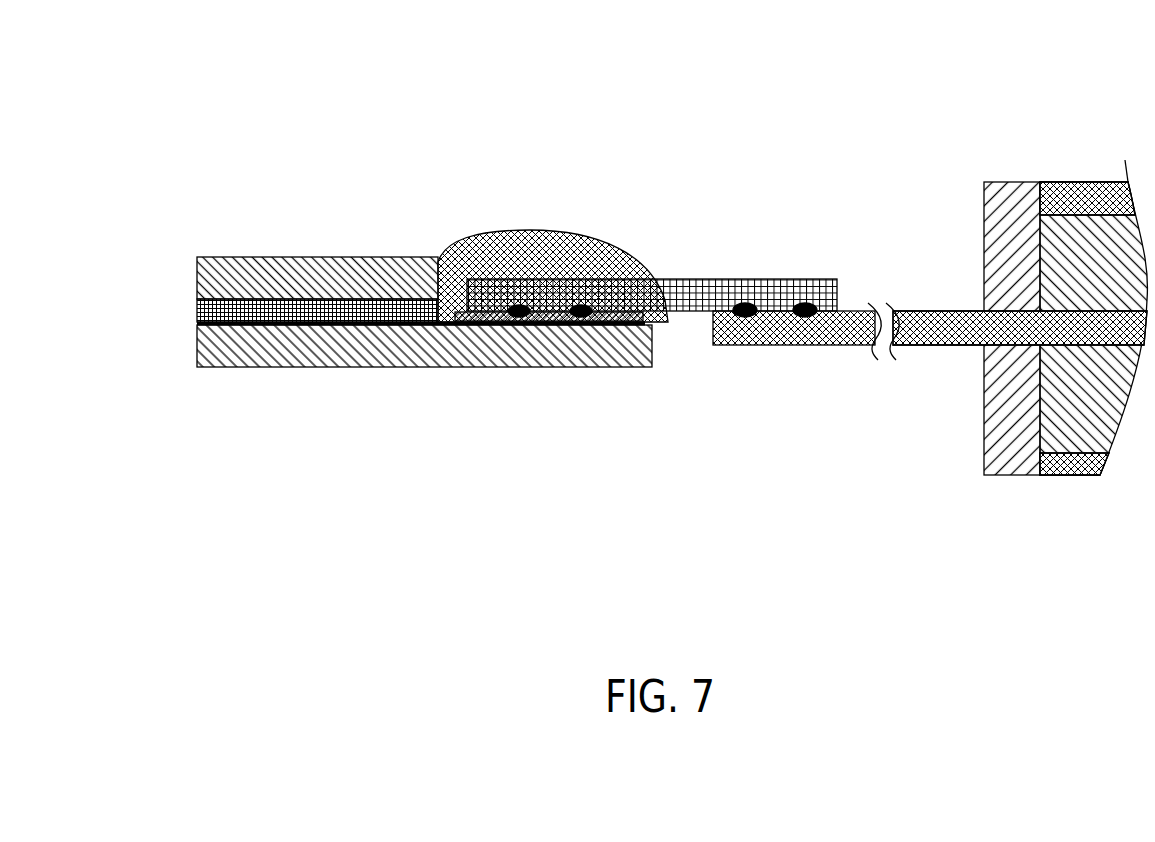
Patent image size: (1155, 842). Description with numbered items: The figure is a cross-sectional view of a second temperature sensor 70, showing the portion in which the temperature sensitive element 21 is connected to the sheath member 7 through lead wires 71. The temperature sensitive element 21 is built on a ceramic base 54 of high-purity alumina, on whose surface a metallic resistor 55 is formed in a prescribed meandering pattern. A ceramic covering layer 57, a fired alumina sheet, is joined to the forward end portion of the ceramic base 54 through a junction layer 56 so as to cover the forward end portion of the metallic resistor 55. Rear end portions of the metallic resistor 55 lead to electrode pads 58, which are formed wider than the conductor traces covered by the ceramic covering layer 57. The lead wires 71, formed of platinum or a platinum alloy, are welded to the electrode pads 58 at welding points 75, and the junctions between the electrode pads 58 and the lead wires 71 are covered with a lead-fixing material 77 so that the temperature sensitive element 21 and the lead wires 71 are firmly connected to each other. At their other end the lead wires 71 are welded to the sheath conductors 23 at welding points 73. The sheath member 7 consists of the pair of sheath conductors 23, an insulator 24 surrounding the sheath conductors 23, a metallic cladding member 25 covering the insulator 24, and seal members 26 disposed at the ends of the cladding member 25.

The second temperature sensor 70 is at (541, 53).
The temperature sensitive element 21 is at (351, 203).
The ceramic covering layer 57 is at (243, 275).
The junction layer 56 is at (197, 312).
The metallic resistor 55 is at (452, 322).
The ceramic base 54 is at (291, 355).
The electrode pads 58 is at (488, 318).
The welding points 75 is at (578, 306).
The lead-fixing material 77 is at (633, 250).
The lead wires 71 is at (747, 295).
The welding points 73 is at (748, 314).
The sheath conductors 23 is at (945, 333).
The seal members 26 is at (1008, 427).
The insulator 24 is at (1070, 423).
The cladding member 25 is at (1090, 468).
The sheath member 7 is at (930, 377).